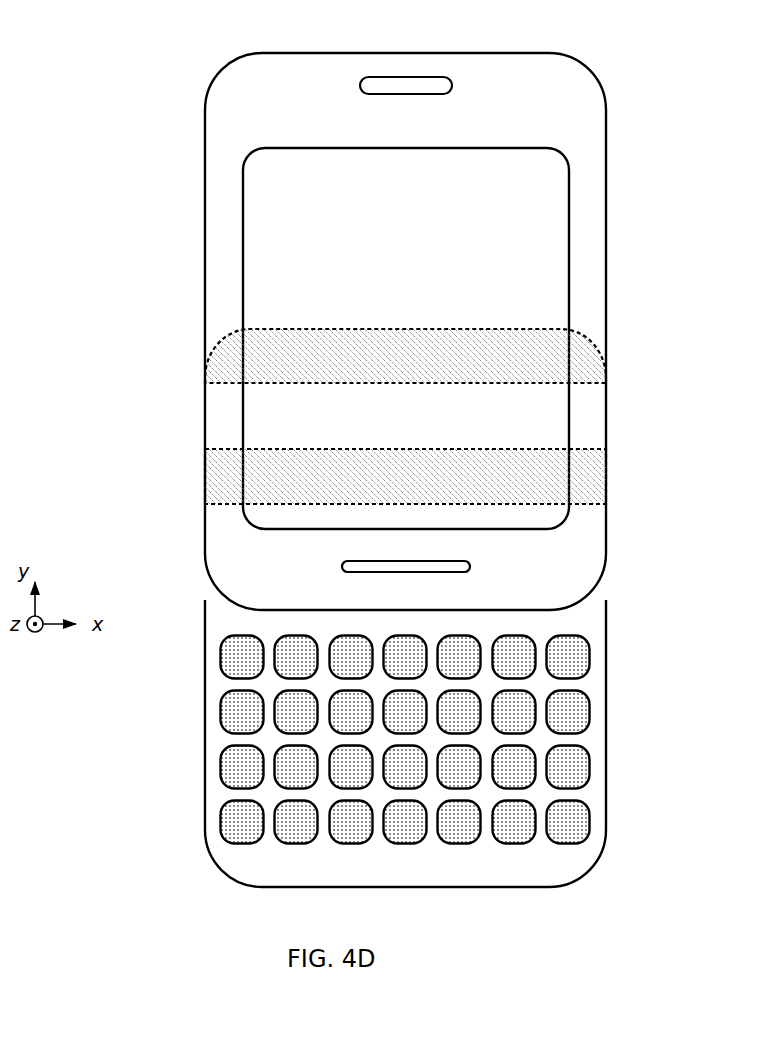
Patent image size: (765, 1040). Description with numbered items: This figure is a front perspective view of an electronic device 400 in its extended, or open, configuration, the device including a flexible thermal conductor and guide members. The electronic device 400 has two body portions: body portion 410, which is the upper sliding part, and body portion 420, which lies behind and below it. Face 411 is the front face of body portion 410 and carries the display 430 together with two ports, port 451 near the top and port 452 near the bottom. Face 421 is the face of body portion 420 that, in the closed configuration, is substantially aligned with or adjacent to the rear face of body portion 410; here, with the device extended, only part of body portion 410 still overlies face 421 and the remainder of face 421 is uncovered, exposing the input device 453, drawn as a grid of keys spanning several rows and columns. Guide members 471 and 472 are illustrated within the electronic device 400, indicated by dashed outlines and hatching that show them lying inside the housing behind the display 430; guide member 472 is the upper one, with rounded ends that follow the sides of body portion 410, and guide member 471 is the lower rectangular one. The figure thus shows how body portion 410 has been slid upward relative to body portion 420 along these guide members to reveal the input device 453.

The electronic device 400 is at (104, 101).
The body portion 410 is at (552, 53).
The face 411 is at (228, 80).
The body portion 420 is at (558, 887).
The face 421 is at (214, 621).
The display 430 is at (512, 148).
The port 451 is at (440, 94).
The port 452 is at (460, 572).
The input device 453 is at (618, 636).
The guide member 471 is at (214, 470).
The guide member 472 is at (214, 367).